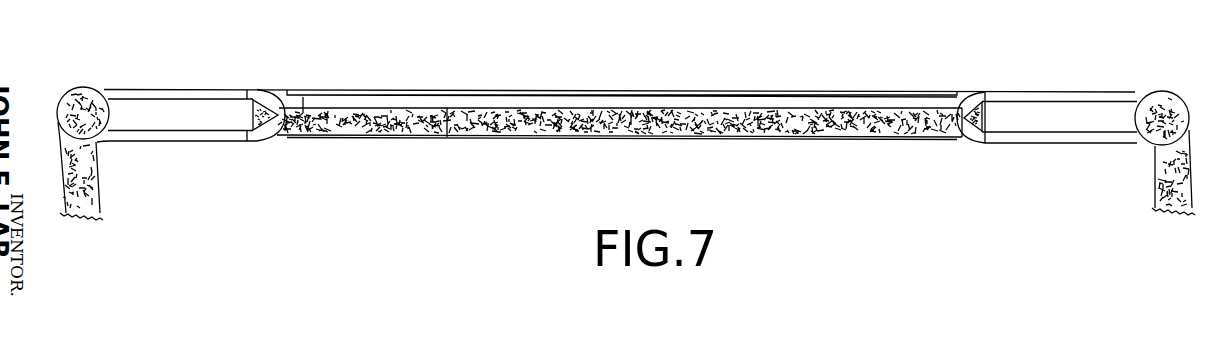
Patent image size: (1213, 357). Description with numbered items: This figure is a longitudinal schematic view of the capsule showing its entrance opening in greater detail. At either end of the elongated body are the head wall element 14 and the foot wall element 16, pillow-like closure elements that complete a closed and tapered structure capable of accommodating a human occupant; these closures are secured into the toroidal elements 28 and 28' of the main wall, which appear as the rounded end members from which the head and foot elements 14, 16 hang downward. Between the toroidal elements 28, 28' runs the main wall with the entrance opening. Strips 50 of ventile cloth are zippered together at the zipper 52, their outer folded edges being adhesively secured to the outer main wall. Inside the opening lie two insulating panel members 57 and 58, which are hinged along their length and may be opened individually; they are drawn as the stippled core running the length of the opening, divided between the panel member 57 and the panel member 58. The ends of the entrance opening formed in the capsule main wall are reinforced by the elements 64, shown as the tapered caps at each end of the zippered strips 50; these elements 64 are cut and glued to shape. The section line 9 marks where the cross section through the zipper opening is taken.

The section line 9— 9 is at (307, 65).
The head wall element 14 is at (118, 180).
The foot wall element 16 is at (1145, 180).
The toroidal element 28 is at (103, 84).
The toroidal element 28' is at (1162, 87).
The strips of ventile cloth 50 is at (172, 89).
The zipper 52 is at (538, 90).
The insulating panel member 57 is at (415, 131).
The insulating panel member 58 is at (718, 128).
The opening reinforcement element 64 is at (256, 93).